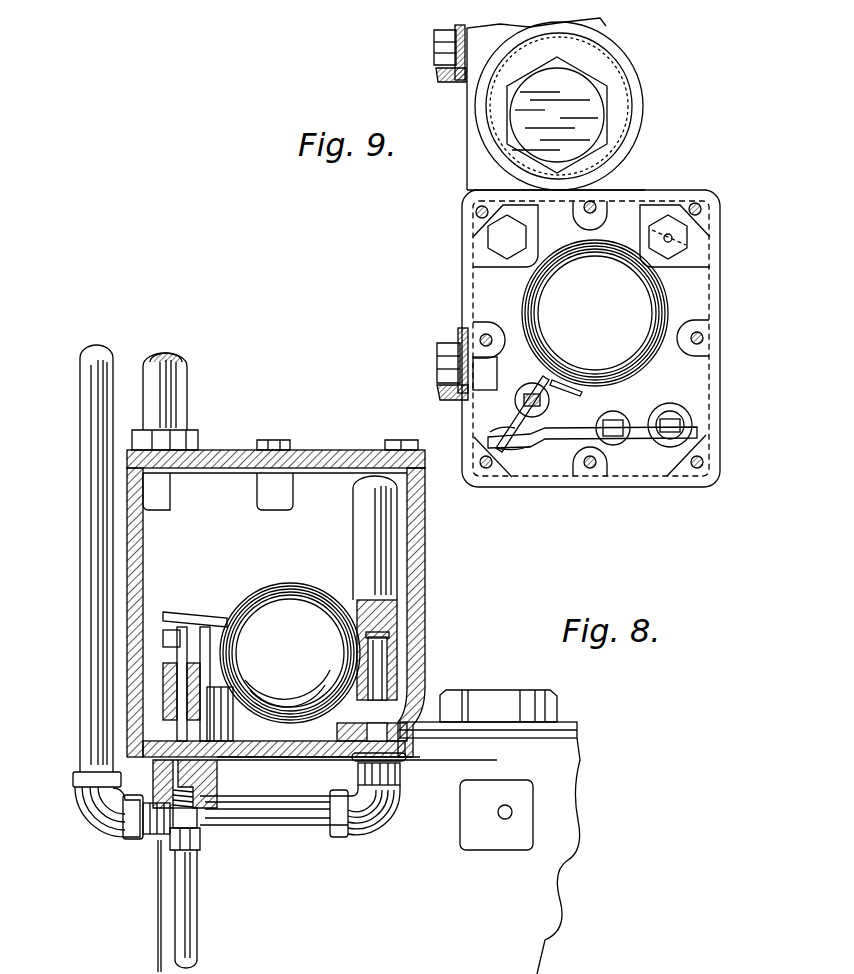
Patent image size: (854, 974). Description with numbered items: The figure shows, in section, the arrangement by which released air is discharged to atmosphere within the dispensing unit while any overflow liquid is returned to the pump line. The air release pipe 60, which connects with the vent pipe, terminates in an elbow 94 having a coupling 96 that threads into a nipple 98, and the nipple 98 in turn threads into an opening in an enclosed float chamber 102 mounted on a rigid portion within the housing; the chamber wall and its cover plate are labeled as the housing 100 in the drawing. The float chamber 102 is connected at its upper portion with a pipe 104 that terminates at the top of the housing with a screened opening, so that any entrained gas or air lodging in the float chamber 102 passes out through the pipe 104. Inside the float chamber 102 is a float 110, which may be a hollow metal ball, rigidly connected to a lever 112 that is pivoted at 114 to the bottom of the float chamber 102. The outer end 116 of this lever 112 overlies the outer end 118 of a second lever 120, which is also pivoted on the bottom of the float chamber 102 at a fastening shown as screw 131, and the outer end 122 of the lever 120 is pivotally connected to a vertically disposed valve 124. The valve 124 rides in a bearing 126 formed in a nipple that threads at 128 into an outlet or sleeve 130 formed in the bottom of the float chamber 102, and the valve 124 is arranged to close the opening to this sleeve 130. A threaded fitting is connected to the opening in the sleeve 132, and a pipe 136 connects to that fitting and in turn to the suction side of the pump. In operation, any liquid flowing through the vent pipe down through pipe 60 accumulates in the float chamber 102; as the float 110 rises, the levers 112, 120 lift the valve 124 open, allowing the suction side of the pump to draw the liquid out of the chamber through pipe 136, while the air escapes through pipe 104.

In FIG. 8, the air release pipe 60 is at (98, 382).
In FIG. 8, the elbow 94 is at (313, 828).
In FIG. 8, the coupling 96 is at (378, 826).
In FIG. 8, the nipple 98 is at (415, 702).
In FIG. 9, the housing 100 is at (690, 234).
In FIG. 8, the housing 100 is at (400, 628).
In FIG. 9, the float chamber 102 is at (718, 376).
In FIG. 8, the float chamber 102 is at (251, 548).
In FIG. 8, the pipe 104 is at (165, 388).
In FIG. 9, the float 110 is at (595, 313).
In FIG. 8, the float 110 is at (290, 590).
In FIG. 9, the lever 112 is at (546, 380).
In FIG. 9, the pivot 114 is at (549, 405).
In FIG. 9, the outer end of lever 116 is at (490, 432).
In FIG. 9, the outer end of lever 118 is at (517, 452).
In FIG. 9, the lever 120 is at (574, 440).
In FIG. 9, the outer end of lever 122 is at (643, 445).
In FIG. 8, the outer end of lever 122 is at (184, 622).
In FIG. 8, the valve 124 is at (177, 670).
In FIG. 8, the bearing 126 is at (167, 700).
In FIG. 8, the threaded connection 128 is at (155, 762).
In FIG. 8, the outlet or sleeve 130 is at (215, 798).
In FIG. 9, the screw 131 is at (625, 418).
In FIG. 8, the sleeve 132 is at (218, 760).
In FIG. 8, the pipe 136 is at (200, 940).